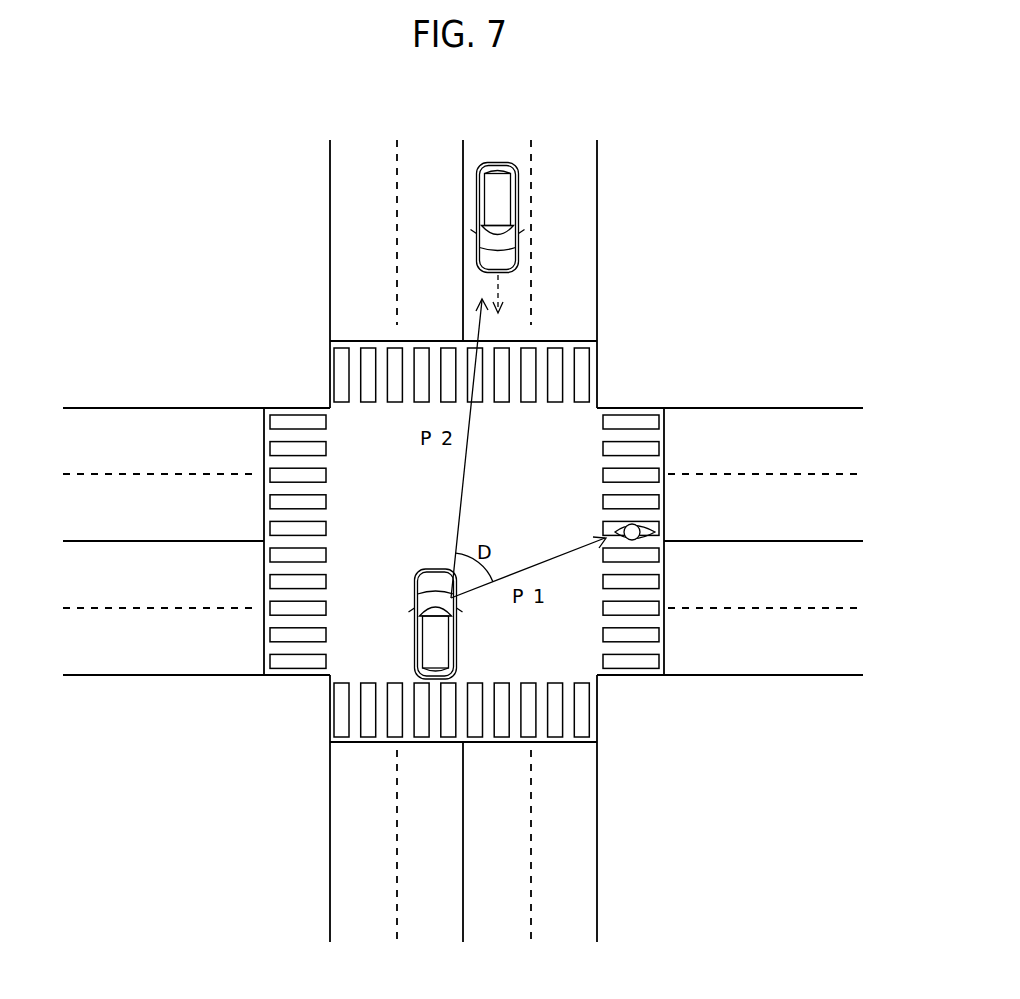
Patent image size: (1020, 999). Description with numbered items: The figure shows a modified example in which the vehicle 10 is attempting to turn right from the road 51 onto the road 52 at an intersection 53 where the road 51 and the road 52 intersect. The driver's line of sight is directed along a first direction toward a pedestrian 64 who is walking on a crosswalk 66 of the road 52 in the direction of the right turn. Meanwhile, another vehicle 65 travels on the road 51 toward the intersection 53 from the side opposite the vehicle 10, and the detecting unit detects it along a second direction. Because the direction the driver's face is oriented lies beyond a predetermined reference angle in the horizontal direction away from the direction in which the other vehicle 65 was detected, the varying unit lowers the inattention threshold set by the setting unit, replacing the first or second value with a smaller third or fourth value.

The vehicle 10 is at (413, 640).
The road 51 is at (328, 858).
The road 52 is at (188, 407).
The intersection 53 is at (407, 503).
The pedestrian 64 is at (656, 529).
The other vehicle 65 is at (505, 214).
The crosswalk 66 is at (652, 418).